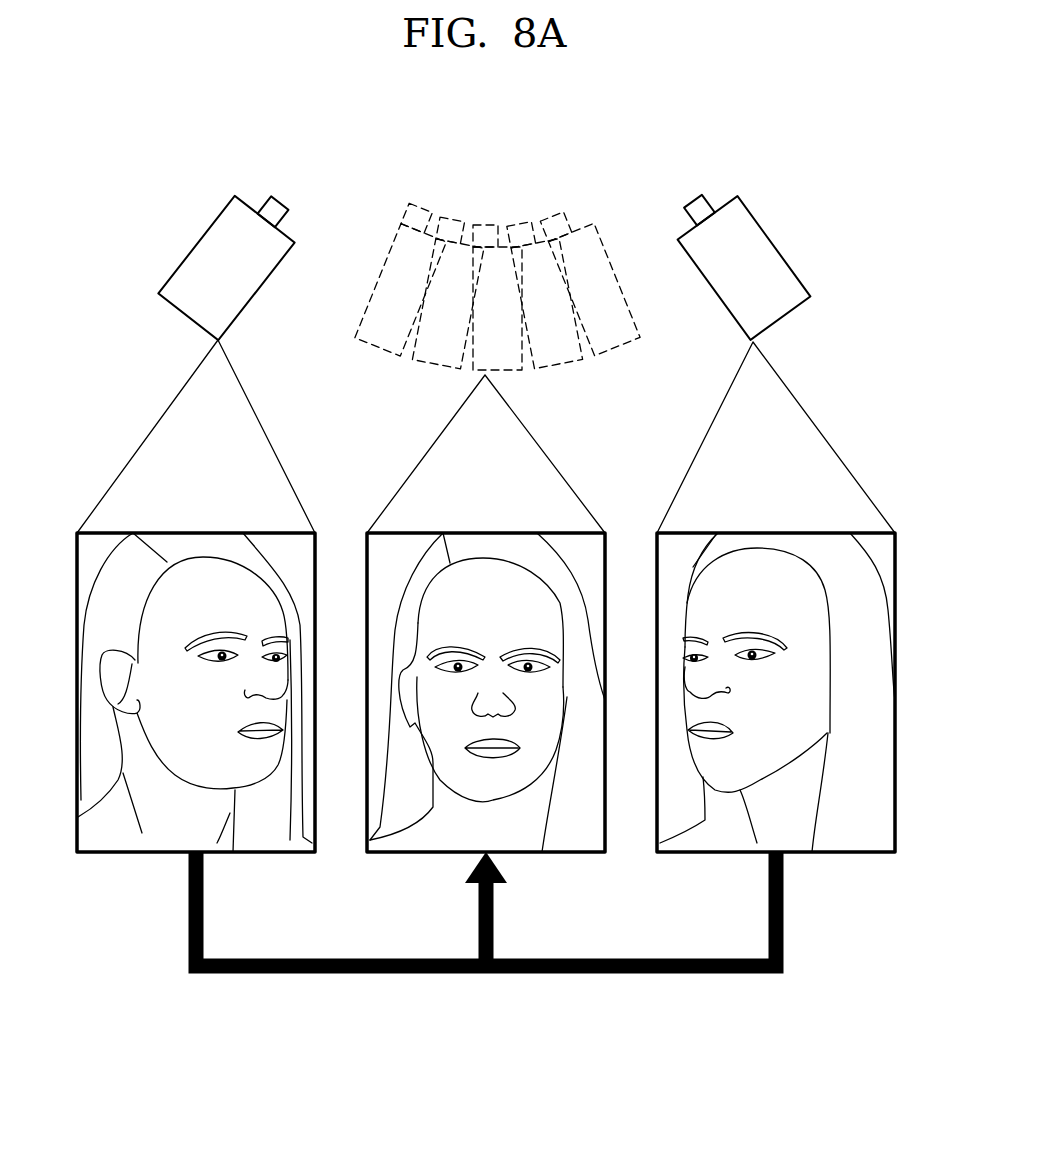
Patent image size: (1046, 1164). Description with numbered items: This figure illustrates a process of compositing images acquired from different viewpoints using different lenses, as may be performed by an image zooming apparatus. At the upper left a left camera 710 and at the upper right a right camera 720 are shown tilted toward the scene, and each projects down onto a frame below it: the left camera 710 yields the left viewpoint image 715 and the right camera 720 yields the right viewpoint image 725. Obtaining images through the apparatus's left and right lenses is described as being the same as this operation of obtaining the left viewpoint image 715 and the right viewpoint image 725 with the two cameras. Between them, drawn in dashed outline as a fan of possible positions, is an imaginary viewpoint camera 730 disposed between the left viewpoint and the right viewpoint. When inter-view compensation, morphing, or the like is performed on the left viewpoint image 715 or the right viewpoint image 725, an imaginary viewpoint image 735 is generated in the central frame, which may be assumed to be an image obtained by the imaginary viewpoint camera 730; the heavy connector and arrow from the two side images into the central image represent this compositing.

The left camera 710 is at (208, 227).
The right camera 720 is at (757, 215).
The imaginary viewpoint camera 730 is at (490, 225).
The left viewpoint image 715 is at (125, 852).
The imaginary viewpoint image 735 is at (575, 852).
The right viewpoint image 725 is at (855, 852).